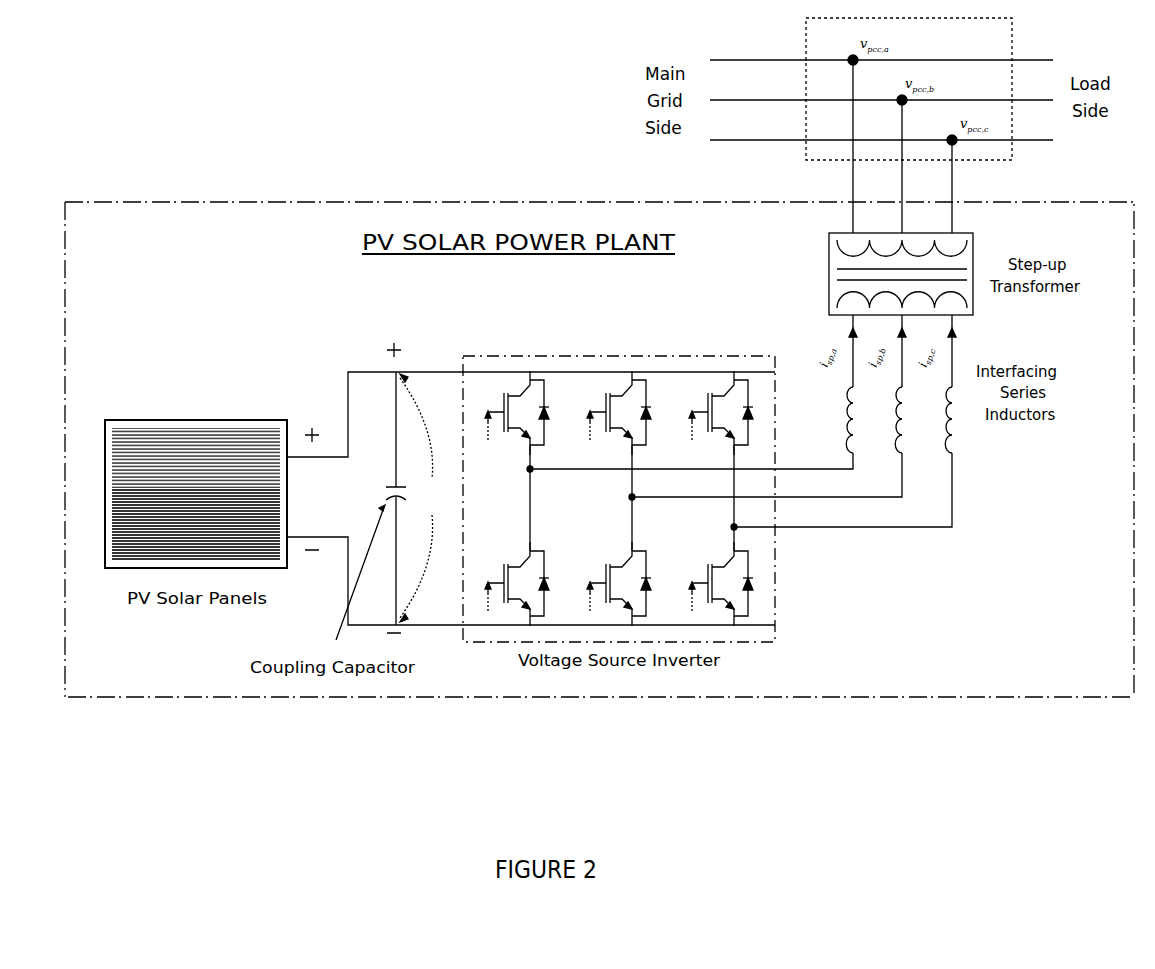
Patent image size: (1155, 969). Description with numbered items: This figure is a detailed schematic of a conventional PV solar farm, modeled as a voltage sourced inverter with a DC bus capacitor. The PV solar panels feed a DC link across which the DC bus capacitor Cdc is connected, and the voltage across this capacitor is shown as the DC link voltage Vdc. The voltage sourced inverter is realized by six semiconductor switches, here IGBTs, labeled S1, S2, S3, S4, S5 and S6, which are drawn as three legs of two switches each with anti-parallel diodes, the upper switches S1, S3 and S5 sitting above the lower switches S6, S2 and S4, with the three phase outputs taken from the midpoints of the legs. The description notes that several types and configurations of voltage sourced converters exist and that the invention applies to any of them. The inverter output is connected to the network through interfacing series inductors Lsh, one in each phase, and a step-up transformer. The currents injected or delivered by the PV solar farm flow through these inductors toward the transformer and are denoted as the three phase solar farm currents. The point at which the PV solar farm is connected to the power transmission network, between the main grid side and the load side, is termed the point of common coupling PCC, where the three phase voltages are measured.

The semiconductor switch S1 is at (512, 413).
The semiconductor switch S2 is at (614, 584).
The semiconductor switch S3 is at (614, 413).
The semiconductor switch S4 is at (716, 584).
The semiconductor switch S5 is at (716, 413).
The semiconductor switch S6 is at (512, 584).
The DC bus capacitor Cdc is at (376, 498).
The DC link voltage Vdc is at (417, 498).
The interfacing series inductor Lsh is at (878, 420).
The point of common coupling PCC is at (909, 89).